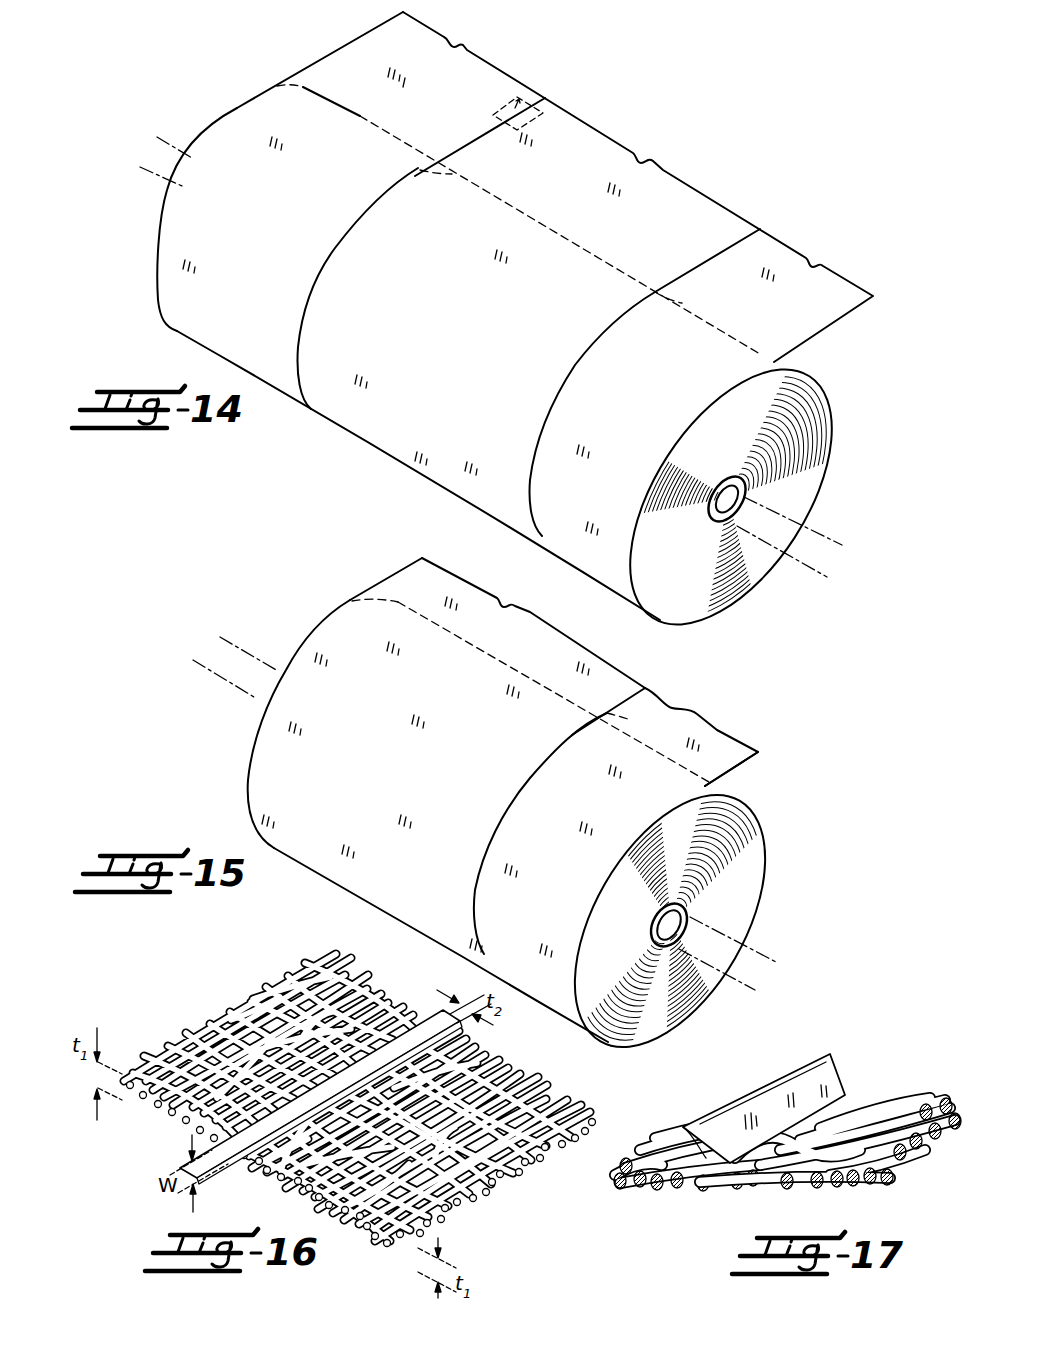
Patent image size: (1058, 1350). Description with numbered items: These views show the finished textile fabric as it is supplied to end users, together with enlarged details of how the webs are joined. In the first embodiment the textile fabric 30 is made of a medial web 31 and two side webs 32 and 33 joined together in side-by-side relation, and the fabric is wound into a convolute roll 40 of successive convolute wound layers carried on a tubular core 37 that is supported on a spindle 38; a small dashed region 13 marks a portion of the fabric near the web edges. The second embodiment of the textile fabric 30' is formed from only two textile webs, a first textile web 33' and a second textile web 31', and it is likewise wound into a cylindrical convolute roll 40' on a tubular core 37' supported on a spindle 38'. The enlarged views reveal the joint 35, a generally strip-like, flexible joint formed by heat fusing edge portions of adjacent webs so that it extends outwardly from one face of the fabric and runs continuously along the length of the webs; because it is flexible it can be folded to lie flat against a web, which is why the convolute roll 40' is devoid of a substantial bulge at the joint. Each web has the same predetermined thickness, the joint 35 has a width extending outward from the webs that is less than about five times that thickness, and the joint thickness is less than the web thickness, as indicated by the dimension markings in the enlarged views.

In FIG. 14, the detail area of sheet 13 is at (516, 90).
In FIG. 14, the textile fabric 30 is at (638, 187).
In FIG. 15, the textile fabric 30' is at (554, 645).
In FIG. 14, the medial web 31 is at (535, 137).
In FIG. 16, the medial web 31 is at (268, 1051).
In FIG. 17, the medial web 31 is at (702, 1169).
In FIG. 15, the second textile web 31' is at (608, 682).
In FIG. 14, the side web 32 is at (462, 70).
In FIG. 14, the side web 33 is at (773, 258).
In FIG. 16, the side web 33 is at (423, 1139).
In FIG. 17, the side web 33 is at (830, 1156).
In FIG. 15, the first textile web 33' is at (749, 745).
In FIG. 16, the joint 35 is at (394, 1036).
In FIG. 17, the joint 35 is at (838, 1074).
In FIG. 14, the tubular core 37 is at (725, 478).
In FIG. 15, the tubular core 37' is at (640, 925).
In FIG. 14, the spindle 38 is at (789, 558).
In FIG. 15, the spindle 38' is at (753, 949).
In FIG. 14, the convolute roll 40 is at (506, 334).
In FIG. 15, the convolute roll 40' is at (498, 820).